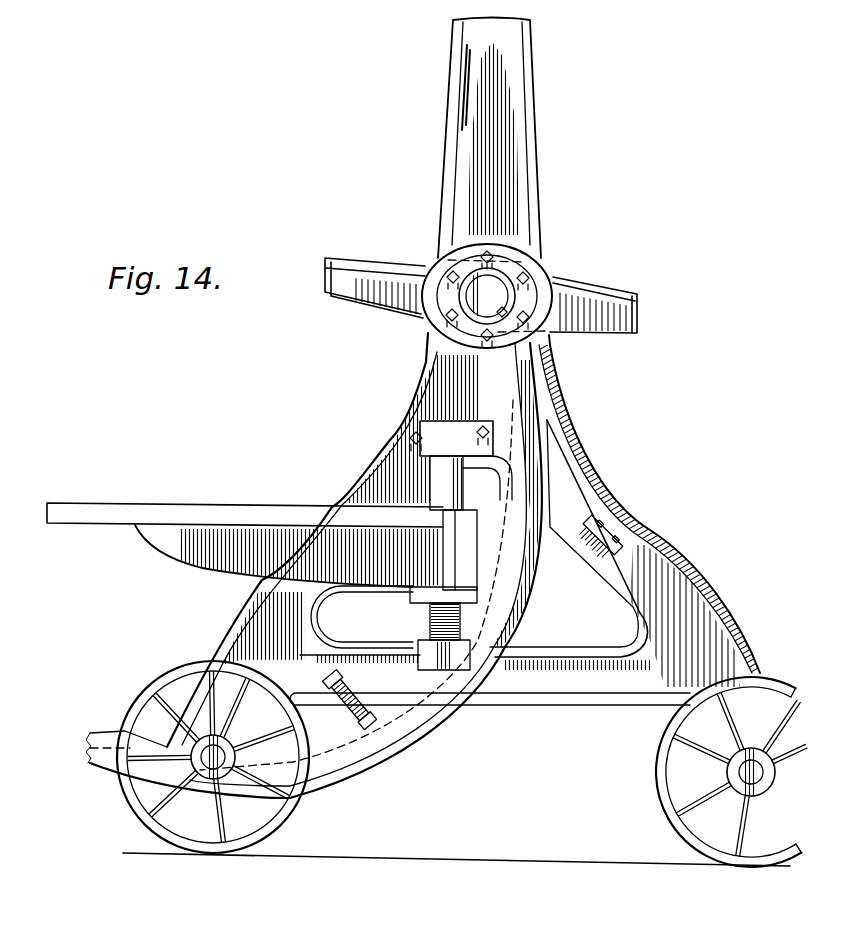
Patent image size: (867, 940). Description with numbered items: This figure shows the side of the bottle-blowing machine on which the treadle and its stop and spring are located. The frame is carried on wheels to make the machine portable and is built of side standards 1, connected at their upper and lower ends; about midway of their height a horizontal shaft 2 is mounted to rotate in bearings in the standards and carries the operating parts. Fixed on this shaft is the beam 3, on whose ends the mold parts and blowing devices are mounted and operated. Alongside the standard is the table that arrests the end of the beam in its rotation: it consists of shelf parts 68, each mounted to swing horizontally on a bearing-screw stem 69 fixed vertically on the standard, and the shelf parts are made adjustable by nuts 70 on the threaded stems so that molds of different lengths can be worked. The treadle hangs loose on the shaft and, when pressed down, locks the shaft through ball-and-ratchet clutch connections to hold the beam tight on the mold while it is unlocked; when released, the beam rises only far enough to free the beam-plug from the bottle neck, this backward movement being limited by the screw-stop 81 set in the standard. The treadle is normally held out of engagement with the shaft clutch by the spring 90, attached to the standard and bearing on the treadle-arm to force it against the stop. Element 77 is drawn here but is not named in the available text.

The side standards 1 is at (489, 138).
The horizontal shaft 2 is at (487, 296).
The beam 3 is at (379, 266).
The shelf parts 68 is at (251, 516).
The bearing-screw stem 69 is at (465, 493).
The nuts 70 is at (410, 592).
The curved rail 77 is at (443, 718).
The screw-stop 81 is at (350, 707).
The spring 90 is at (560, 496).